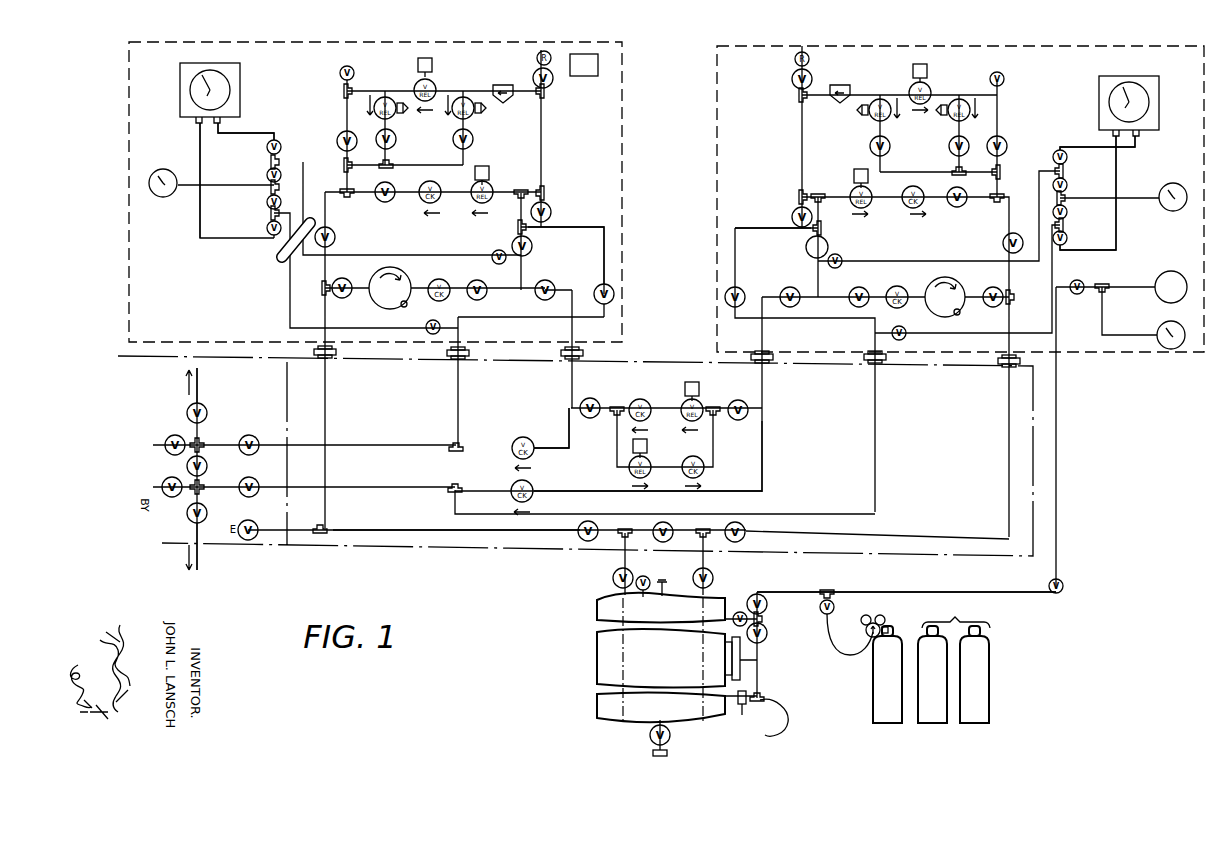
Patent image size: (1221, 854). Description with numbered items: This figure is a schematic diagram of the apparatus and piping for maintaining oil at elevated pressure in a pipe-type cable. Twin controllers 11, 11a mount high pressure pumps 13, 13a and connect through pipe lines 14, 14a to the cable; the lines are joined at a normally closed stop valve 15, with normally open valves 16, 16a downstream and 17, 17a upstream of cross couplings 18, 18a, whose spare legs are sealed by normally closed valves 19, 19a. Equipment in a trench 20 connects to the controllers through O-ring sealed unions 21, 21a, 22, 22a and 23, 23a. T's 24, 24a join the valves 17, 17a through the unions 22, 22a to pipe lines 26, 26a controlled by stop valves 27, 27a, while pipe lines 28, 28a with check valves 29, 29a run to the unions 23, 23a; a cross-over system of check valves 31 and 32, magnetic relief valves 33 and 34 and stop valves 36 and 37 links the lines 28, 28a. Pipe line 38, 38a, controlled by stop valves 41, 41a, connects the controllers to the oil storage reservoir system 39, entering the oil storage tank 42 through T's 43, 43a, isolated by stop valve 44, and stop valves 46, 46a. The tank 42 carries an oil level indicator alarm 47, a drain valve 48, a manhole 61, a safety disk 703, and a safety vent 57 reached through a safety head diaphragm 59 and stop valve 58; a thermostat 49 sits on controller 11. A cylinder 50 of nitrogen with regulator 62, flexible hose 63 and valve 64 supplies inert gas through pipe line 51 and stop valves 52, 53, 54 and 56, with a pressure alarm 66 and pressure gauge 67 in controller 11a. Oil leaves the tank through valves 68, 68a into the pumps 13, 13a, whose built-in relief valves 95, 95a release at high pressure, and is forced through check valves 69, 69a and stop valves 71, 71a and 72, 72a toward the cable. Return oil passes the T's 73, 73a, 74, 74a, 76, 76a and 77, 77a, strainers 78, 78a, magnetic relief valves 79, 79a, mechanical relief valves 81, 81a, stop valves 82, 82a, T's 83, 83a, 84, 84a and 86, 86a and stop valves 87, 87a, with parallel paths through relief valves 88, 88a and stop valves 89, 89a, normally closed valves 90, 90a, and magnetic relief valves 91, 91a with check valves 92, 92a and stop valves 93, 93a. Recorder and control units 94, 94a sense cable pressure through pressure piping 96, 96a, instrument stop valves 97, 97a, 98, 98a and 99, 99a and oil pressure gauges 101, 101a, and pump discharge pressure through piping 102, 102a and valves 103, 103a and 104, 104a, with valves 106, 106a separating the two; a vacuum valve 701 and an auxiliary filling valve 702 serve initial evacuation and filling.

The controller 11 is at (648, 214).
The controller 11a is at (715, 200).
The high pressure pump 13 is at (404, 282).
The high pressure pump 13a is at (960, 285).
The pipe line 14 is at (202, 392).
The pipe line 14a is at (202, 560).
The manual stop valve 15 is at (208, 466).
The manual valve 16 is at (208, 413).
The manual valve 16a is at (208, 513).
The manual valve 17 is at (254, 436).
The manual valve 17a is at (256, 479).
The cross coupling 18 is at (204, 442).
The cross coupling 18a is at (192, 492).
The manual valve 19 is at (168, 436).
The manual valve 19a is at (164, 484).
The trench 20 is at (1053, 474).
The O-ring sealed union 21 is at (328, 360).
The O-ring sealed union 21a is at (1008, 368).
The O-ring sealed union 22 is at (468, 354).
The O-ring sealed union 22a is at (880, 366).
The O-ring sealed union 23 is at (583, 355).
The O-ring sealed union 23a is at (766, 366).
The T 24 is at (462, 446).
The T 24a is at (452, 495).
The pipe line 26 is at (585, 226).
The pipe line 26a is at (753, 236).
The manual stop valve 27 is at (615, 295).
The manual stop valve 27a is at (742, 288).
The pipe line 28 is at (562, 446).
The pipe line 28a is at (764, 470).
The check valve 29 is at (523, 437).
The check valve 29a is at (532, 488).
The check valve 31 is at (645, 400).
The check valve 32 is at (704, 473).
The magnetic relief valve 33 is at (703, 402).
The magnetic relief valve 34 is at (630, 472).
The manual stop valve 36 is at (598, 402).
The manual stop valve 37 is at (742, 421).
The pipe line 38 is at (345, 528).
The pipe line 38a is at (966, 530).
The oil storage reservoir system 39 is at (834, 716).
The manual stop valve 41 is at (578, 530).
The manual stop valve 41a is at (746, 531).
The oil storage tank 42 is at (597, 606).
The T 43 is at (626, 528).
The T 43a is at (708, 528).
The stop valve 44 is at (668, 526).
The manual stop valve 46 is at (612, 579).
The manual stop valve 46a is at (712, 582).
The oil level indicator alarm 47 is at (663, 579).
The manual stop valve 48 is at (671, 737).
The thermostat 49 is at (597, 56).
The cylinder 50 is at (873, 690).
The pipe line 51 is at (1016, 580).
The manual stop valve 52 is at (739, 611).
The manual stop valve 53 is at (768, 604).
The manual stop valve 54 is at (1064, 588).
The manual stop valve 56 is at (1076, 296).
The safety vent 57 is at (787, 703).
The manual stop valve 58 is at (768, 632).
The safety head diaphragm 59 is at (743, 716).
The manhole 61 is at (748, 666).
The regulator 62 is at (880, 624).
The flexible hose 63 is at (832, 650).
The manual stop valve 64 is at (836, 607).
The pressure alarm 66 is at (1176, 266).
The pressure gauge 67 is at (1158, 326).
The manual stop valve 68 is at (350, 282).
The manual stop valve 68a is at (1004, 293).
The check valve 69 is at (448, 284).
The check valve 69a is at (903, 287).
The manual stop valve 71 is at (485, 284).
The manual stop valve 71a is at (862, 287).
The manual stop valve 72 is at (552, 284).
The manual stop valve 72a is at (790, 287).
The T 73 is at (516, 227).
The T 73a is at (824, 229).
The T 74 is at (523, 190).
The T 74a is at (820, 193).
The T 76 is at (548, 193).
The T 76a is at (796, 199).
The T 77 is at (548, 91).
The T 77a is at (796, 96).
The strainer 78 is at (512, 86).
The strainer 78a is at (842, 88).
The magnetic relief valve 79 is at (433, 70).
The magnetic relief valve 79a is at (930, 74).
The mechanical relief valve 81 is at (400, 100).
The mechanical relief valve 81a is at (965, 100).
The manual stop valve 82 is at (401, 136).
The manual stop valve 82a is at (950, 150).
The T 83 is at (394, 166).
The T 83a is at (955, 176).
The T 84 is at (339, 165).
The T 84a is at (1004, 168).
The T 86 is at (339, 192).
The T 86a is at (1002, 195).
The manual stop valve 87 is at (336, 238).
The manual stop valve 87a is at (1003, 242).
The mechanical relief valve 88 is at (478, 100).
The mechanical relief valve 88a is at (888, 100).
The manual stop valve 89 is at (475, 141).
The manual stop valve 89a is at (892, 144).
The manual valve 90 is at (338, 139).
The manual valve 90a is at (1004, 140).
The magnetic relief valve 91 is at (490, 176).
The magnetic relief valve 91a is at (860, 170).
The check valve 92 is at (428, 206).
The check valve 92a is at (905, 193).
The manual stop valve 93 is at (388, 205).
The manual stop valve 93a is at (960, 207).
The oil pressure recorder and control unit 94 is at (180, 72).
The oil pressure recorder and control unit 94a is at (1160, 80).
The spring-loaded relief valve 95 is at (406, 307).
The spring-loaded relief valve 95a is at (960, 315).
The pressure piping 96 is at (198, 140).
The pressure piping 96a is at (1117, 248).
The instrument stop valve 97 is at (266, 229).
The instrument stop valve 97a is at (1068, 239).
The instrument stop valve 98 is at (440, 330).
The instrument stop valve 98a is at (906, 334).
The instrument stop valve 99 is at (266, 203).
The instrument stop valve 99a is at (1068, 213).
The oil pressure gauge 101 is at (160, 198).
The oil pressure gauge 101a is at (1160, 190).
The pressure piping 102 is at (258, 132).
The pressure piping 102a is at (1138, 146).
The instrument stop valve 103 is at (266, 148).
The instrument stop valve 103a is at (1068, 158).
The instrument stop valve 104 is at (494, 257).
The instrument stop valve 104a is at (842, 261).
The instrument stop valve 106 is at (266, 176).
The instrument stop valve 106a is at (1068, 186).
The manual valve 701 is at (339, 73).
The auxiliary filling valve 702 is at (257, 537).
The safety disk 703 is at (646, 592).